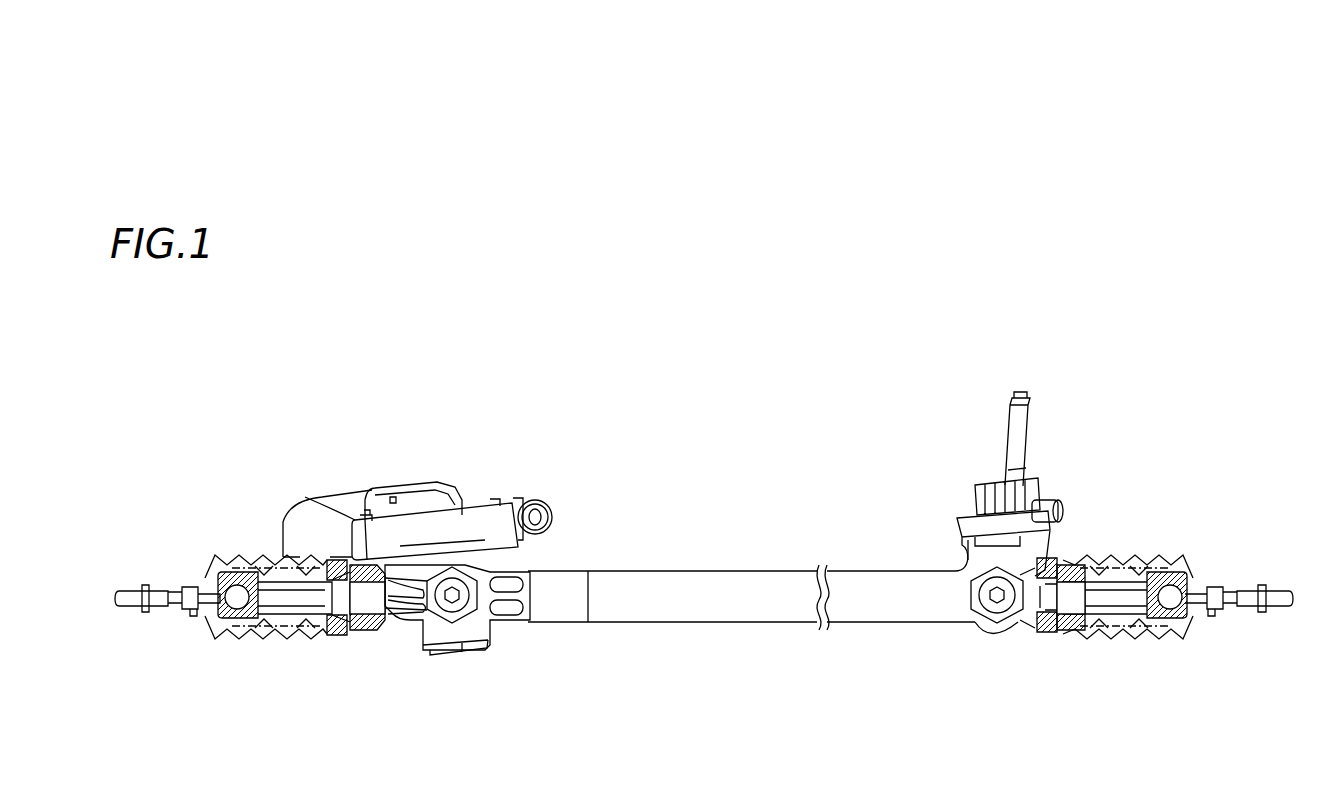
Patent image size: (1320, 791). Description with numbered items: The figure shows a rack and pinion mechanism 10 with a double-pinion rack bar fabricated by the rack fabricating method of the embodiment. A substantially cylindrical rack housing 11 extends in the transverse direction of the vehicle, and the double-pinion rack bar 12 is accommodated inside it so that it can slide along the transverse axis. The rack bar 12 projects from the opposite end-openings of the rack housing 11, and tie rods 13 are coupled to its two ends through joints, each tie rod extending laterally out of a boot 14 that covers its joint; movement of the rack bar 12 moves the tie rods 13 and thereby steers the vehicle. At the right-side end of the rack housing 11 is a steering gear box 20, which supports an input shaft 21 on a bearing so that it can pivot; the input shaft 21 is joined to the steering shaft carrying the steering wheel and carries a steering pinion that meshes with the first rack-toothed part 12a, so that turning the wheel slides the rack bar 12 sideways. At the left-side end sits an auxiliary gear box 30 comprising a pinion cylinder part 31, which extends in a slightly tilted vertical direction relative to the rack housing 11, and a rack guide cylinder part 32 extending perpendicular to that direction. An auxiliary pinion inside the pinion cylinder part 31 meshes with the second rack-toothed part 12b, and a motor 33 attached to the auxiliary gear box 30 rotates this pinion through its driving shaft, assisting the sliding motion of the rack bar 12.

The rack and pinion mechanism 10 is at (706, 562).
The rack housing 11 is at (737, 619).
The double-pinion rack bar 12 is at (1109, 582).
The rack-toothed part (first toothed part) 12a is at (1048, 623).
The rack-toothed part (second toothed part) 12b is at (361, 632).
The tie rod 13 is at (125, 589).
The boot 14 is at (230, 633).
The steering gear box 20 is at (975, 550).
The input shaft 21 is at (1034, 440).
The auxiliary gear box 30 is at (426, 642).
The pinion cylinder part 31 is at (471, 652).
The rack guide cylinder part 32 is at (457, 519).
The motor 33 is at (338, 506).